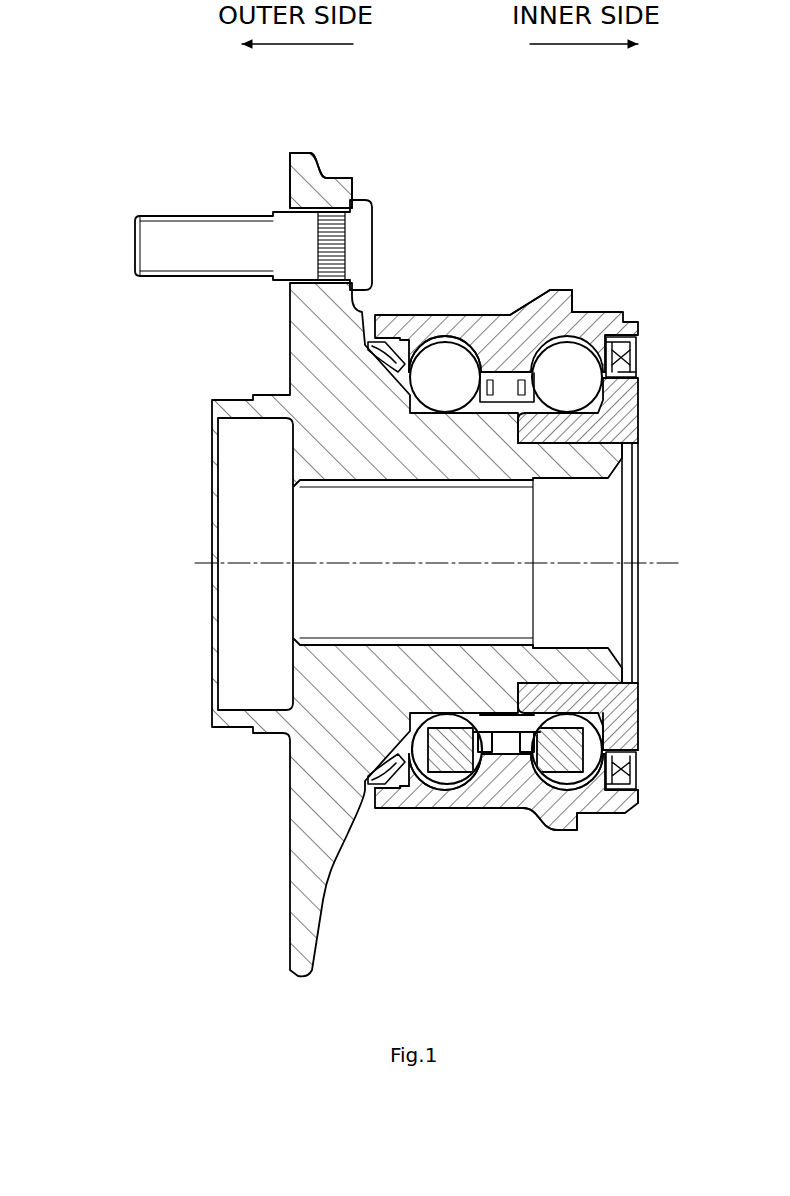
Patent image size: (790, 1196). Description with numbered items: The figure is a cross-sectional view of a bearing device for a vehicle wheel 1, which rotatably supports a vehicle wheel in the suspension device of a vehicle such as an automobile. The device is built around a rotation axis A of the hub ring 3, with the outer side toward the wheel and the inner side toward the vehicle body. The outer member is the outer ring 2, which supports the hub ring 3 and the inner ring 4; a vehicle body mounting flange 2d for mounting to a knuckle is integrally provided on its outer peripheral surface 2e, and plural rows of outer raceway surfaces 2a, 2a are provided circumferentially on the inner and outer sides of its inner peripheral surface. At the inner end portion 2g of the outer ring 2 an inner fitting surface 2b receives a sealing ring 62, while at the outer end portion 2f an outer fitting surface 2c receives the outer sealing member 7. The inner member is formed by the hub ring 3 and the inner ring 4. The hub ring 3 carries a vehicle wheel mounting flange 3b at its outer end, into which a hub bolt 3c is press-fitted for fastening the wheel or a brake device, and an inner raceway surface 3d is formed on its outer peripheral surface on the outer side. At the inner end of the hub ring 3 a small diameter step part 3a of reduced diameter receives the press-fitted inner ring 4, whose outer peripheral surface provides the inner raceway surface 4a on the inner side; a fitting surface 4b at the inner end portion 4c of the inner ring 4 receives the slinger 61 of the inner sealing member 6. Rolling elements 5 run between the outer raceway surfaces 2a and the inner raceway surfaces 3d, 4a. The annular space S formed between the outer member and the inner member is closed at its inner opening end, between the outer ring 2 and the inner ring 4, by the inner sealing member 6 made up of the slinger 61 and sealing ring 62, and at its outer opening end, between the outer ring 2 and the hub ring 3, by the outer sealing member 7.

The bearing device for a vehicle wheel 1 is at (84, 138).
The outer ring 2 is at (509, 302).
The outer raceway surfaces 2a is at (450, 780).
The inner fitting surface 2b is at (598, 795).
The outer fitting surface 2c is at (405, 778).
The vehicle body mounting flange 2d is at (562, 291).
The outer peripheral surface 2e is at (447, 340).
The outer end portion 2f is at (379, 790).
The inner end portion 2g is at (639, 795).
The hub ring 3 is at (282, 377).
The small diameter step part 3a is at (625, 690).
The vehicle wheel mounting flange 3b is at (302, 165).
The hub bolt 3c is at (207, 225).
The inner raceway surface 3d is at (430, 400).
The inner ring 4 is at (643, 690).
The inner raceway surface 4a is at (568, 705).
The fitting surface 4b is at (637, 716).
The inner end portion 4c is at (641, 738).
The rolling elements 5 is at (440, 355).
The inner sealing member 6 is at (650, 337).
The slinger 61 is at (640, 370).
The sealing ring 62 is at (613, 352).
The outer sealing member 7 is at (373, 344).
The annular space S is at (505, 384).
The rotation axis A is at (445, 566).